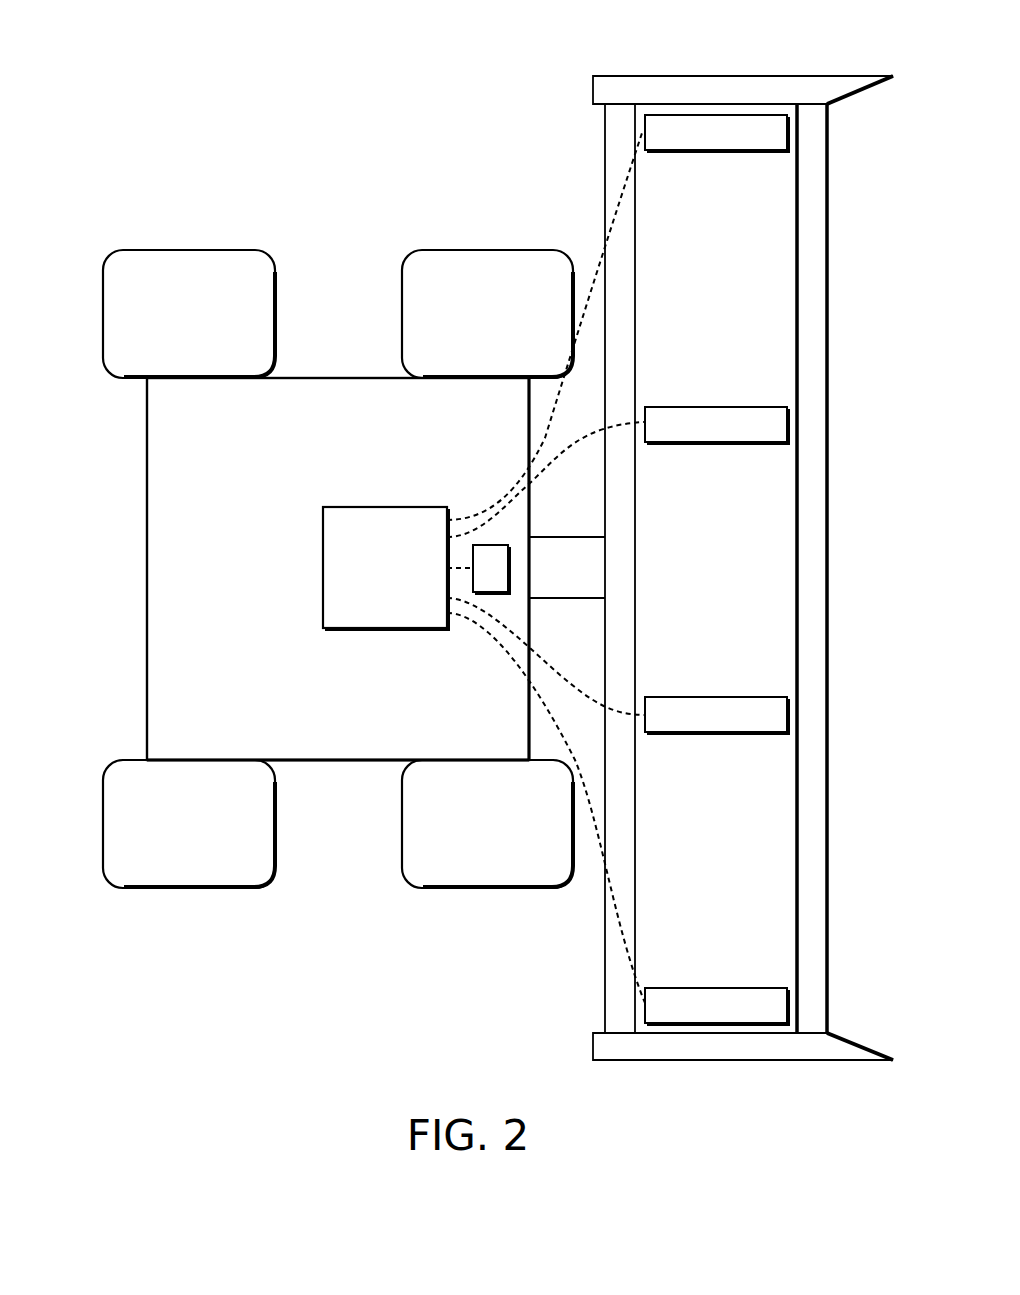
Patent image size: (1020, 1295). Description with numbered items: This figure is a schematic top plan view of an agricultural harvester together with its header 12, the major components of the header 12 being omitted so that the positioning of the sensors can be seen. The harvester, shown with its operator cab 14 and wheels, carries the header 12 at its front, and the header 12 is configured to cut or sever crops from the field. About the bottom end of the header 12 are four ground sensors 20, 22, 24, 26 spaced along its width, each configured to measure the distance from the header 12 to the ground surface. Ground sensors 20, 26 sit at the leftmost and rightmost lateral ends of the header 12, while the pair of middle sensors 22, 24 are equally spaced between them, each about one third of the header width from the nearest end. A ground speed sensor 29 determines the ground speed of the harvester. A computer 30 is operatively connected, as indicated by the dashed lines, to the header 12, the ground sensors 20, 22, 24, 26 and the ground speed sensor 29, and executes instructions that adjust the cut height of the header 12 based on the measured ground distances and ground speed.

The header 12 is at (587, 146).
The operator cab 14 is at (147, 571).
The ground sensor 20 is at (728, 115).
The ground sensor 22 is at (768, 407).
The ground sensor 24 is at (773, 733).
The ground sensor 26 is at (753, 1023).
The ground speed sensor 29 is at (492, 545).
The computer 30 is at (388, 507).